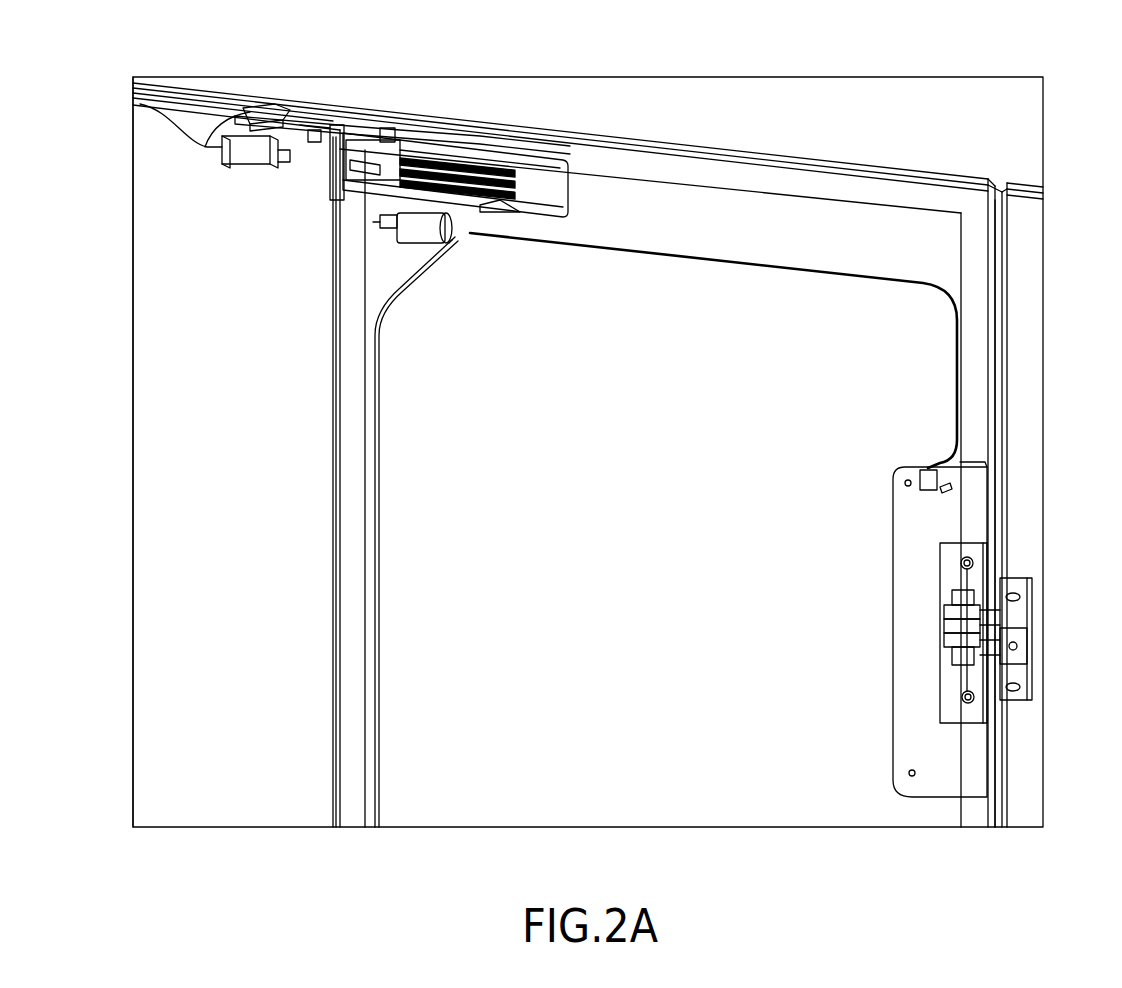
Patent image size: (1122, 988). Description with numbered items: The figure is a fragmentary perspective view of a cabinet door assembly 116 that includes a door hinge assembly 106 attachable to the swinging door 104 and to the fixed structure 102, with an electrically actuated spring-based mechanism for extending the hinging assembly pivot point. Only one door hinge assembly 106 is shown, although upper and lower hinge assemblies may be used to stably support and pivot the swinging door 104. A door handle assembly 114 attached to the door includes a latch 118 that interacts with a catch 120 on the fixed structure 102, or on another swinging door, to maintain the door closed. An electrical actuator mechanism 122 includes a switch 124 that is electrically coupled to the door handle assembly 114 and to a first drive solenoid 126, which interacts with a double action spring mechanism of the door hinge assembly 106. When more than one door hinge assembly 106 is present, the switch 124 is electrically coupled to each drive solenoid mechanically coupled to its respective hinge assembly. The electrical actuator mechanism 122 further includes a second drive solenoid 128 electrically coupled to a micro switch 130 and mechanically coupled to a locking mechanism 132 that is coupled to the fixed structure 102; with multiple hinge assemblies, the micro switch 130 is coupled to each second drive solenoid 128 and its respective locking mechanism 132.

The fixed structure 102 is at (150, 302).
The swinging door 104 is at (872, 190).
The door hinge assembly 106 is at (353, 92).
The door handle assembly 114 is at (1013, 490).
The cabinet door assembly 116 is at (670, 62).
The latch 118 is at (975, 600).
The catch 120 is at (985, 646).
The electrical actuator mechanism 122 is at (633, 265).
The switch 124 is at (928, 462).
The first drive solenoid 126 is at (418, 228).
The second drive solenoid 128 is at (247, 160).
The micro switch 130 is at (262, 104).
The locking mechanism 132 is at (313, 156).